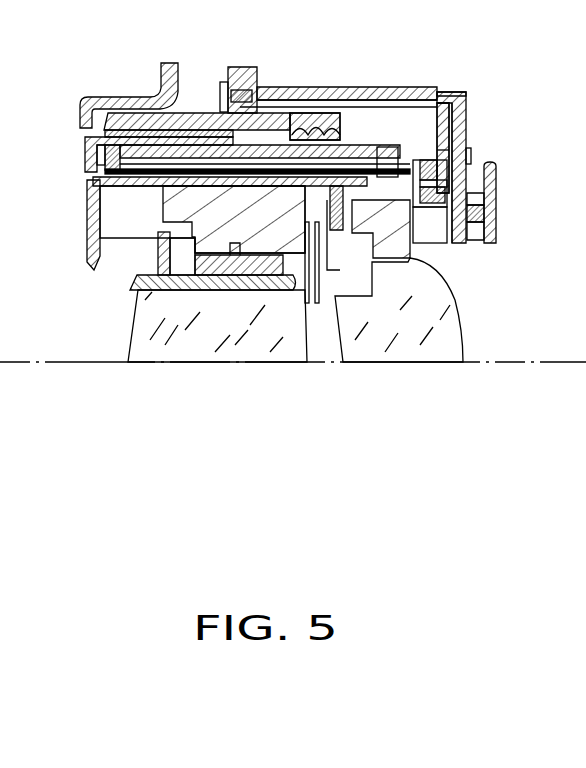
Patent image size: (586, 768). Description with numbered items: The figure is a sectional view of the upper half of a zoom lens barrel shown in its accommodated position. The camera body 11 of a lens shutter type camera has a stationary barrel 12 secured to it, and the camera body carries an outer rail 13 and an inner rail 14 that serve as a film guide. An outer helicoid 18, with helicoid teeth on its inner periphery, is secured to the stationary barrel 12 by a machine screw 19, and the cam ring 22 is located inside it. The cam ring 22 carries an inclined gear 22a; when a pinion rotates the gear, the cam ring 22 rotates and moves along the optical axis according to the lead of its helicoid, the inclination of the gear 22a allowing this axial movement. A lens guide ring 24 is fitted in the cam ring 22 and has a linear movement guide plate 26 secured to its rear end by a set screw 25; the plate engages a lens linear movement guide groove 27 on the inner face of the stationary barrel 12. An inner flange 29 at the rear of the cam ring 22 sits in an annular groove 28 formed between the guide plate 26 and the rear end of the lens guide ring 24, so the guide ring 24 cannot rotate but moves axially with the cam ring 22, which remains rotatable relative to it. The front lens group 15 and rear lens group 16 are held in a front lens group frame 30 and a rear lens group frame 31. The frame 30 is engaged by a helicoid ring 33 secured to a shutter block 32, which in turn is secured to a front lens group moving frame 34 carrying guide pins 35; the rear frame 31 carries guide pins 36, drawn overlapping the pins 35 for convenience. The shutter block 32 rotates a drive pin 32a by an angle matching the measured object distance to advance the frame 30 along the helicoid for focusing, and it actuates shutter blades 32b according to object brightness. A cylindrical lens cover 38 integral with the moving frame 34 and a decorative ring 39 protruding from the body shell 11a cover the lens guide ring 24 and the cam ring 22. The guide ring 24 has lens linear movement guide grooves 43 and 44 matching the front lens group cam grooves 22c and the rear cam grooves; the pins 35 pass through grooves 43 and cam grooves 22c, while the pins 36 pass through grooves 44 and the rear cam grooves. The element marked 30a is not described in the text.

The camera body 11 is at (470, 177).
The body shell 11a is at (116, 99).
The stationary barrel 12 is at (240, 67).
The outer rail 13 is at (497, 212).
The inner rail 14 is at (500, 236).
The front lens group 15 is at (218, 348).
The rear lens group 16 is at (400, 347).
The outer helicoid 18 is at (197, 113).
The machine screw 19 is at (202, 112).
The cam ring 22 is at (364, 140).
The gear 22a is at (318, 115).
The front lens group cam grooves 22c is at (410, 125).
The lens guide ring 24 is at (85, 163).
The set screw 25 is at (450, 207).
The linear movement guide plate 26 is at (463, 133).
The lens linear movement guide groove 27 is at (463, 96).
The annular groove 28 is at (497, 192).
The inner flange 29 is at (467, 155).
The front lens group frame 30 is at (134, 292).
The ring plate portion 30a is at (157, 262).
The rear lens group frame 31 is at (440, 290).
The shutter block 32 is at (163, 207).
The drive pin 32a is at (157, 242).
The shutter blades 32b is at (318, 345).
The helicoid ring 33 is at (183, 338).
The front lens group moving frame 34 is at (325, 262).
The guide pins 35 is at (462, 118).
The guide pins 36 is at (443, 148).
The cylindrical lens cover 38 is at (86, 217).
The decorative ring 39 is at (85, 147).
The lens linear movement guide grooves 43 is at (262, 170).
The lens linear movement guide grooves 44 is at (315, 126).